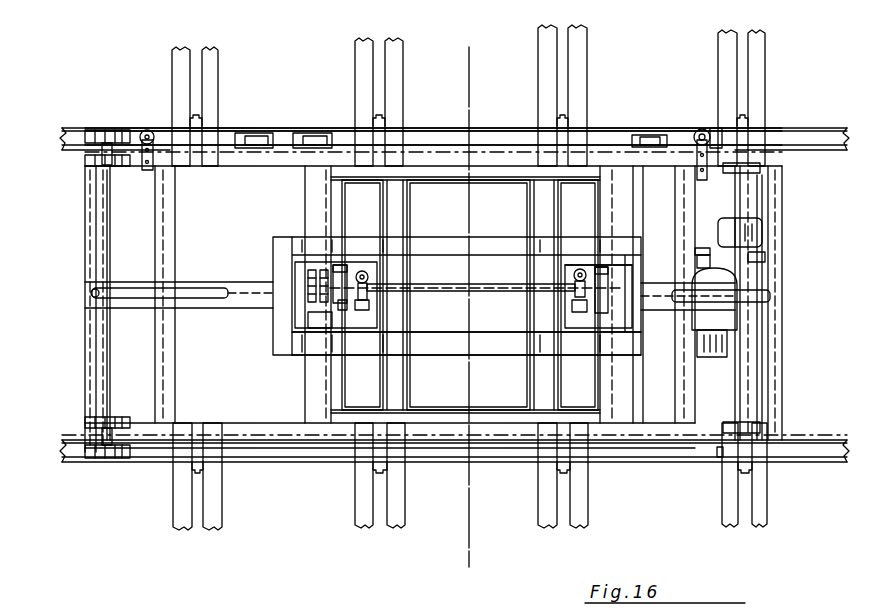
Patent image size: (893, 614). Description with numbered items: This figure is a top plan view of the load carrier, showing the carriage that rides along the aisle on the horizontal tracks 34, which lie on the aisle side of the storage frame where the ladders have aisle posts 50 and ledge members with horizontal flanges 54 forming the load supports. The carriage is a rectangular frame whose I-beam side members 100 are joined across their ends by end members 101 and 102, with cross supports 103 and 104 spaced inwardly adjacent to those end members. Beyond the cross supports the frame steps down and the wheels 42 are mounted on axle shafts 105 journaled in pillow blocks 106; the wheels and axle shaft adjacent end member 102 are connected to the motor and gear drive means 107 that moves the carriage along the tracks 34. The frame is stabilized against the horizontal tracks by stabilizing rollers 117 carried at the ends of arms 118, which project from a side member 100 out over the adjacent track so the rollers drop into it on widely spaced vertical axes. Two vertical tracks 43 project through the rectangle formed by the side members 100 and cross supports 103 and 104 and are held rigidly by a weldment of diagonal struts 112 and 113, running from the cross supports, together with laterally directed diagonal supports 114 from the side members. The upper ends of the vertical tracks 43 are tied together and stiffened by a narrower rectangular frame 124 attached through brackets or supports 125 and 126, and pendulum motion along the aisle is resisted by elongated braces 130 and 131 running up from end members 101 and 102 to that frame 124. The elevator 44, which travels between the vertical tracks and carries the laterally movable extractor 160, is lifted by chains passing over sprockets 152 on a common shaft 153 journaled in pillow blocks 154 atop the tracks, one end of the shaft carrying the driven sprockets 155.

The tracks 34 is at (70, 128).
The wheels 42 is at (107, 130).
The vertical tracks 43 is at (350, 265).
The elevator 44 is at (380, 192).
The aisle post 50 is at (200, 115).
The horizontally disposed flange 54 is at (211, 46).
The side members 100 is at (482, 128).
The end member 101 is at (85, 366).
The end member 102 is at (782, 262).
The cross support 103 is at (178, 377).
The cross support 104 is at (690, 394).
The axle shafts 105 is at (107, 243).
The pillow blocks 106 is at (85, 160).
The motor and gear drive means 107 is at (727, 325).
The diagonal struts 112 is at (215, 282).
The diagonal struts 113 is at (650, 284).
The laterally directed diagonal supports 114 is at (302, 189).
The stabilizing rollers 117 is at (137, 130).
The arms 118 is at (147, 175).
The rectangular frame 124 is at (503, 338).
The brackets or supports 125 is at (300, 238).
The brackets or supports 126 is at (580, 262).
The brace 130 is at (92, 293).
The brace 131 is at (772, 296).
The sprockets 152 is at (370, 277).
The shaft 153 is at (450, 293).
The pillow blocks 154 is at (601, 268).
The driven sprockets 155 is at (310, 285).
The extractor 160 is at (475, 384).